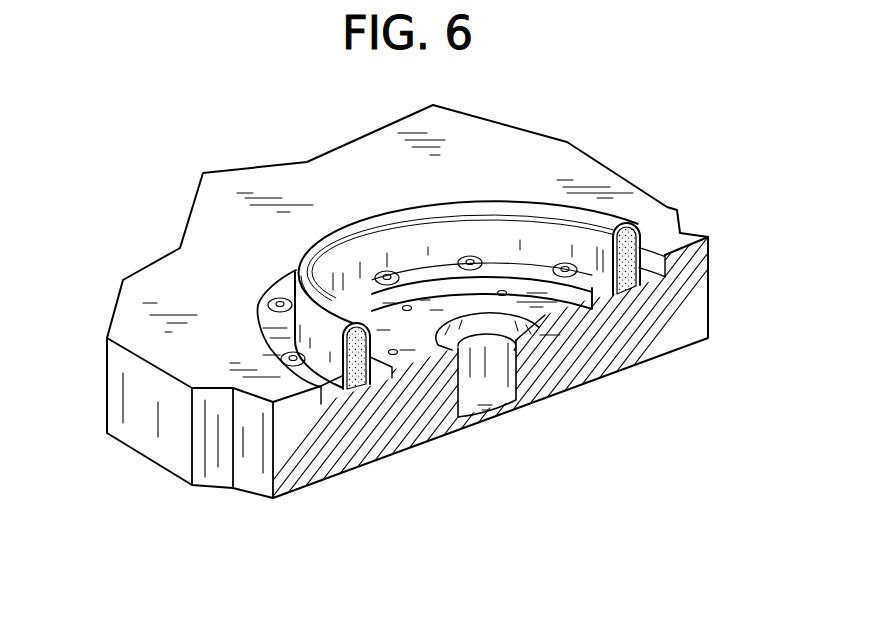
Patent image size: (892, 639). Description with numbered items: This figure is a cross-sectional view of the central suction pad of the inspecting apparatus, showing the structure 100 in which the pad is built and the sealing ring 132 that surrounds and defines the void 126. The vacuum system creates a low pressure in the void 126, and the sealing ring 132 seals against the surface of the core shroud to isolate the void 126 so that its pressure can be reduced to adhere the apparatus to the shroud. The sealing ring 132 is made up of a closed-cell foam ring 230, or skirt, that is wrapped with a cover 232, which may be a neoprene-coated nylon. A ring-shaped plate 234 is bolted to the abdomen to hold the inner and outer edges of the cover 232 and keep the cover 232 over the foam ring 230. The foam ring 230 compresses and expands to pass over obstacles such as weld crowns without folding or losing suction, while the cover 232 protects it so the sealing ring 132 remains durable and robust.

The fixture block 100 is at (205, 240).
The sealing ring 132 is at (452, 190).
The closed-cell foam ring 230 is at (633, 233).
The cover 232 is at (580, 217).
The ring-shaped plate 234 is at (412, 273).
The void 126 is at (488, 292).